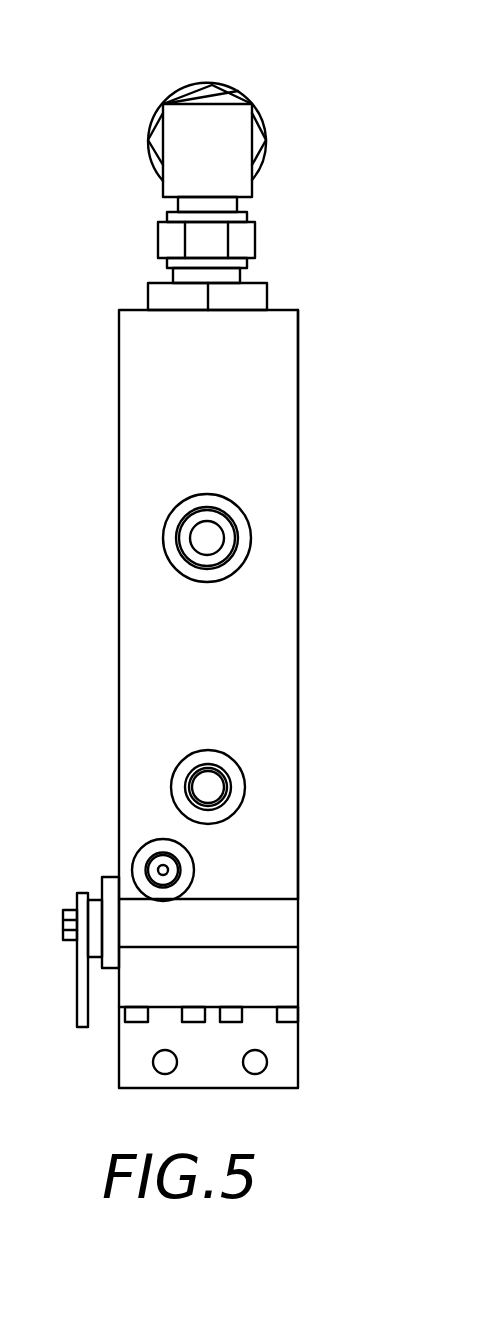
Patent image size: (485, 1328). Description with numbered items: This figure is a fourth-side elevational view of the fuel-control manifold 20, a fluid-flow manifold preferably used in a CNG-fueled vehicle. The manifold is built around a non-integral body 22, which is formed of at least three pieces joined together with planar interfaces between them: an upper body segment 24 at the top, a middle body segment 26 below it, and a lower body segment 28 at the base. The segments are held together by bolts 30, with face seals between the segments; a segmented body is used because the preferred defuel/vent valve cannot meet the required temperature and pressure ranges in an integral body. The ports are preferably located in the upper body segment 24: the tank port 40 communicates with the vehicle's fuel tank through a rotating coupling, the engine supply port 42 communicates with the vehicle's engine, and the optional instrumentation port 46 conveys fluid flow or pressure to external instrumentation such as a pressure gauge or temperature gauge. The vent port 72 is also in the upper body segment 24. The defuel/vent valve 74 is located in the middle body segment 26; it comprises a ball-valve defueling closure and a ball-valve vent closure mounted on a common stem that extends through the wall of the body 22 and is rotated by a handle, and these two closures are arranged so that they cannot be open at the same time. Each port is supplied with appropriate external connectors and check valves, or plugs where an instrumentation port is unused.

The fuel-control manifold 20 is at (126, 100).
The non-integral body 22 is at (112, 390).
The upper body segment 24 is at (298, 397).
The middle body segment 26 is at (300, 916).
The lower body segment 28 is at (300, 978).
The bolts 30 is at (238, 1021).
The tank port 40 is at (176, 283).
The engine supply port 42 is at (228, 516).
The instrumentation port 46 is at (222, 768).
The vent port 72 is at (183, 860).
The defuel/vent valve 74 is at (91, 882).